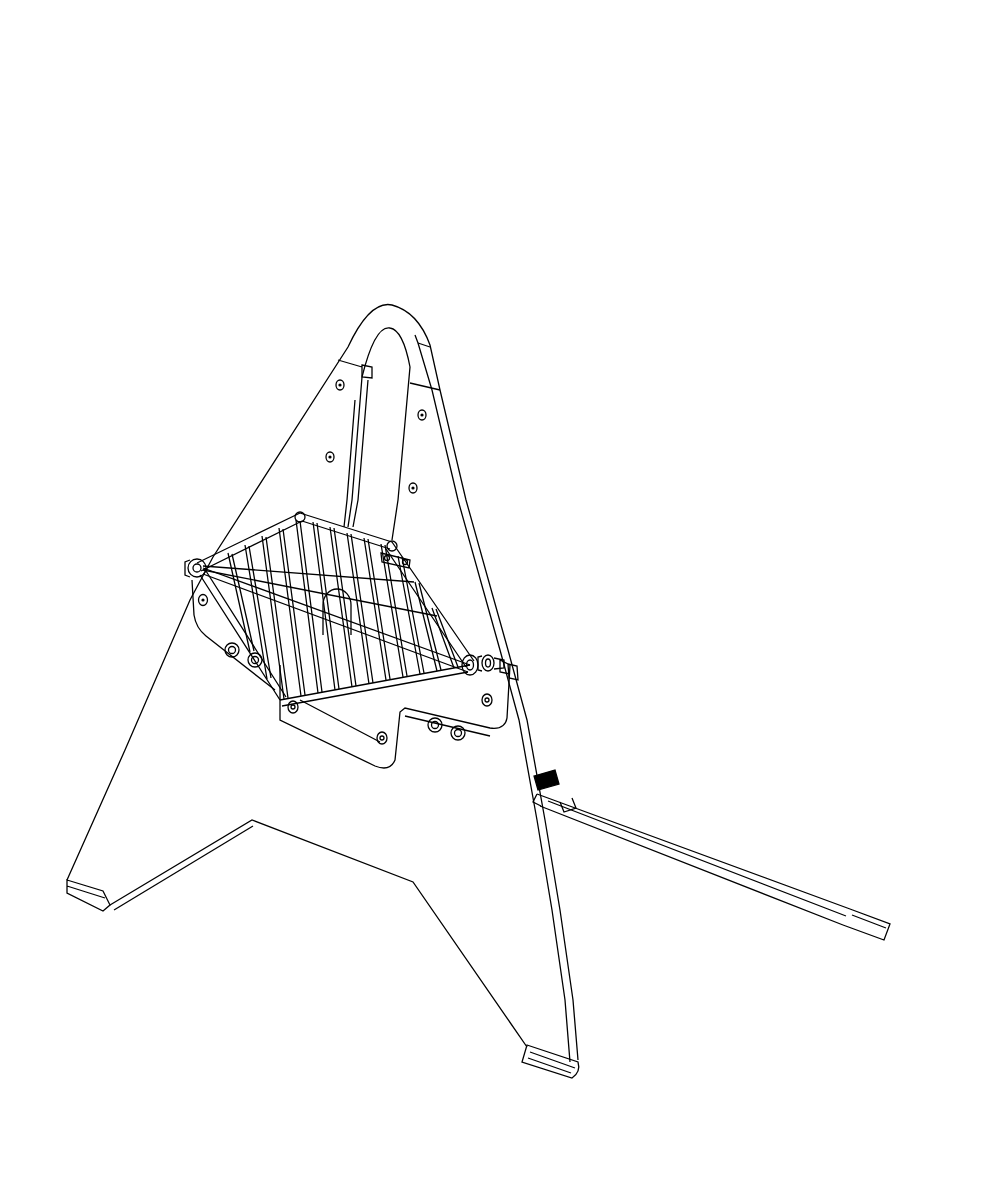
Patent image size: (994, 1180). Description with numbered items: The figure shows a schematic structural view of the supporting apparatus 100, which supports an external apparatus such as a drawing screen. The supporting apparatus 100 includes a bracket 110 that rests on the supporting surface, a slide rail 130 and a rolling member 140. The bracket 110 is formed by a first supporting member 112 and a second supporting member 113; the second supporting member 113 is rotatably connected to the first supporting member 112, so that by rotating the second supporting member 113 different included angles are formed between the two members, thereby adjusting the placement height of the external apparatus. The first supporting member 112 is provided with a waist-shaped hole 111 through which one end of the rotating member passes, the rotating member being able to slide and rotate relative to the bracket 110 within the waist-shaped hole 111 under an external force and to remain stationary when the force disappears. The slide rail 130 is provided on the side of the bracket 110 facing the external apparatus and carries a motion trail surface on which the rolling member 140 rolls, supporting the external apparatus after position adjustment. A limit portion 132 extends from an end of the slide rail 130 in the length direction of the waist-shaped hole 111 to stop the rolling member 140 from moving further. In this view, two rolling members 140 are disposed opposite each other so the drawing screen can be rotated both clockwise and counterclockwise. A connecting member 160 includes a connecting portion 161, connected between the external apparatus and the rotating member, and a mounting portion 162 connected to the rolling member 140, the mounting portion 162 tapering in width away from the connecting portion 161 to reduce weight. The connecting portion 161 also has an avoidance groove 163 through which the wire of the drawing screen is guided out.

The supporting apparatus 100 is at (485, 43).
The bracket 110 is at (767, 670).
The waist-shaped hole 111 is at (390, 438).
The first supporting member 112 is at (488, 763).
The second supporting member 113 is at (615, 827).
The slide rail 130 is at (317, 722).
The limit portion 132 is at (517, 672).
The rolling member 140 is at (497, 660).
The connecting member 160 is at (590, 487).
The connecting portion 161 is at (352, 530).
The mounting portion 162 is at (417, 605).
The avoidance groove 163 is at (247, 638).